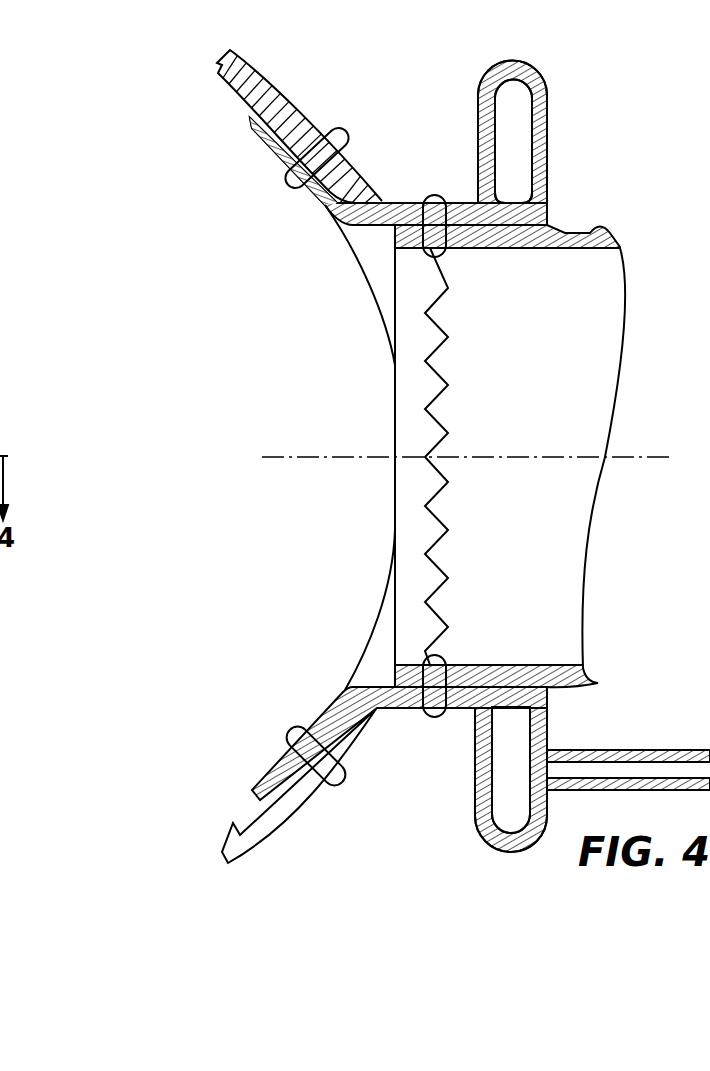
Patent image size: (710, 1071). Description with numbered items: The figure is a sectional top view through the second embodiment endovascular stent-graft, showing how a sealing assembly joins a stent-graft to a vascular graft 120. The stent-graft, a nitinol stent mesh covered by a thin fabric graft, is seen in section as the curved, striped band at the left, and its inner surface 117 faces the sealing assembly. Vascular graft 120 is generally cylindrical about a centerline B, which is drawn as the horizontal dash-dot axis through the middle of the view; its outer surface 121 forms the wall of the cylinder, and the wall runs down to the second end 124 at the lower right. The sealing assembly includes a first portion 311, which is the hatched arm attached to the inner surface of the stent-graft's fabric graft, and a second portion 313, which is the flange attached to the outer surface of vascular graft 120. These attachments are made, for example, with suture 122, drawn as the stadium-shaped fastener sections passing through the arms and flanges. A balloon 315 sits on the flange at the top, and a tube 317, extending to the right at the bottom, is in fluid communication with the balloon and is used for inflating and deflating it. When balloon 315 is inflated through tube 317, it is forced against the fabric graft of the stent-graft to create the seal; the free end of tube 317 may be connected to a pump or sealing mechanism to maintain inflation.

The inner surface 117 is at (243, 96).
The vascular graft 120 is at (544, 430).
The outer surface 121 is at (600, 224).
The suture 122 is at (338, 128).
The second end 124 is at (583, 588).
The first portion 311 is at (325, 208).
The second portion 313 is at (475, 439).
The balloon 315 is at (530, 62).
The tube 317 is at (612, 753).
The centerline B is at (576, 460).